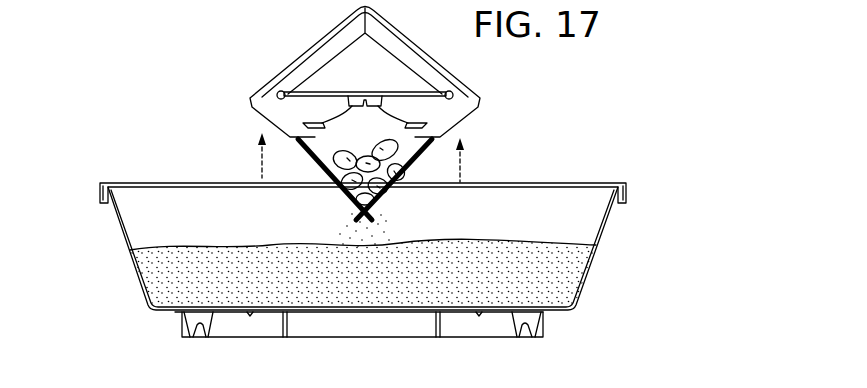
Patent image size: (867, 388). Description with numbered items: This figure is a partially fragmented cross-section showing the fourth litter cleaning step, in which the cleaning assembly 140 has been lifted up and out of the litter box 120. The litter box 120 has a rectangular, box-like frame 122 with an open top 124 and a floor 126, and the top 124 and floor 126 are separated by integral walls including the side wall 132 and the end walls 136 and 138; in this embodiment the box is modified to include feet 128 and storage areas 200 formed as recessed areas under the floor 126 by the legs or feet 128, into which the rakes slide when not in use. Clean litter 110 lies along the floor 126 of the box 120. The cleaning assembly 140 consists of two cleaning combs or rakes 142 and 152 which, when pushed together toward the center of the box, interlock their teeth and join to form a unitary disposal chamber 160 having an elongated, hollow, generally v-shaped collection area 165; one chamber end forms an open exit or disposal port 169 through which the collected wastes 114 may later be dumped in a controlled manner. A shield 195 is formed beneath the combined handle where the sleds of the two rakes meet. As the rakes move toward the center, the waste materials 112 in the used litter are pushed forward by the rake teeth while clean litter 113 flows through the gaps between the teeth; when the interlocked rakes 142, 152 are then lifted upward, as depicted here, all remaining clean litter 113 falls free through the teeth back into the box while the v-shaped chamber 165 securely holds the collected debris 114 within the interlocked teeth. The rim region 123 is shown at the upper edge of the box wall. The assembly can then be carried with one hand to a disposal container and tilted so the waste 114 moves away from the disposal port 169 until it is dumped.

The clean litter 110 is at (160, 250).
The waste materials 112 is at (400, 173).
The clean litter 113 is at (380, 228).
The collected wastes 114 is at (340, 140).
The litter box 120 is at (118, 268).
The frame 122 is at (470, 183).
The rim top surface 123 is at (138, 183).
The open top 124 is at (540, 172).
The floor 126 is at (290, 302).
The feet 128 is at (400, 330).
The side wall 132 is at (547, 197).
The end wall 136 is at (597, 258).
The end wall 138 is at (128, 260).
The cleaning assembly 140 is at (208, 98).
The rake 142 is at (508, 104).
The rake 152 is at (243, 72).
The disposal chamber 160 is at (338, 72).
The collection area 165 is at (290, 153).
The disposal port 169 is at (370, 150).
The shield 195 is at (378, 78).
The storage areas 200 is at (165, 322).